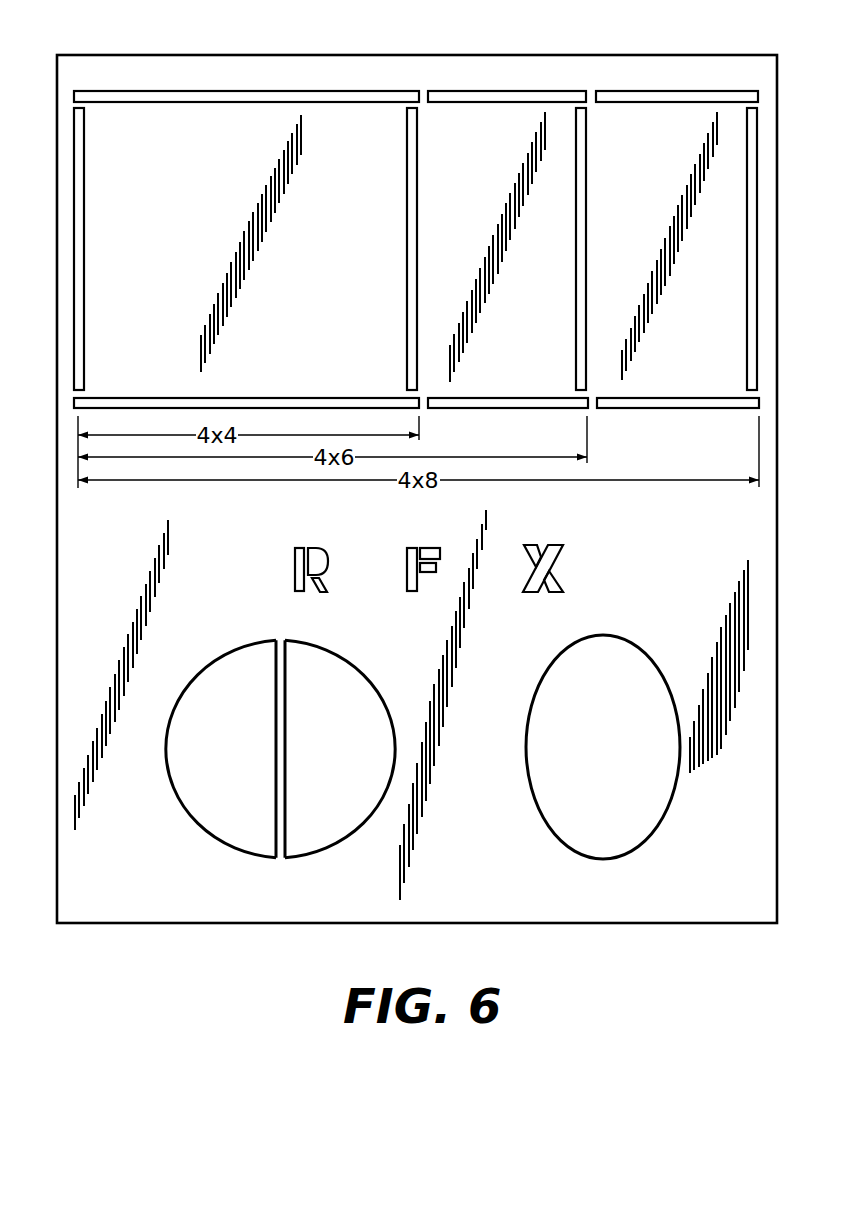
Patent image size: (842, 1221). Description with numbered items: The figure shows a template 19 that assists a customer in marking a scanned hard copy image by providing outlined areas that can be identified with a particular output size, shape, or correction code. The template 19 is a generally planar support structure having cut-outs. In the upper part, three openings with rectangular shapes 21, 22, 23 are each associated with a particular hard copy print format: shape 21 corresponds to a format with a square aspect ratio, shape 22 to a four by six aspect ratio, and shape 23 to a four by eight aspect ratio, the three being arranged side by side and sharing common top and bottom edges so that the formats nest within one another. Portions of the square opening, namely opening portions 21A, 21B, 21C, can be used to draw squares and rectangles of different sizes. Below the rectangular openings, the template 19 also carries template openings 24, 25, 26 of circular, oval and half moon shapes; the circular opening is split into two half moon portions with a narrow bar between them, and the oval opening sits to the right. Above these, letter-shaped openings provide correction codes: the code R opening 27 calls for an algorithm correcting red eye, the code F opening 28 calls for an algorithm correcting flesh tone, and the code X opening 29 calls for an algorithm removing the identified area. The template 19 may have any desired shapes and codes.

The template 19 is at (238, 928).
The rectangular shape opening 21 is at (246, 249).
The opening portion 21A is at (407, 215).
The opening portion 21B is at (220, 103).
The opening portion 21C is at (162, 398).
The rectangular shape opening 22 is at (576, 360).
The rectangular shape opening 23 is at (747, 345).
The template opening 24 is at (290, 858).
The template opening 25 is at (255, 771).
The template opening 26 is at (618, 858).
The code 'R' template opening 27 is at (295, 577).
The code 'F' template opening 28 is at (407, 577).
The code 'X' template opening 29 is at (528, 576).